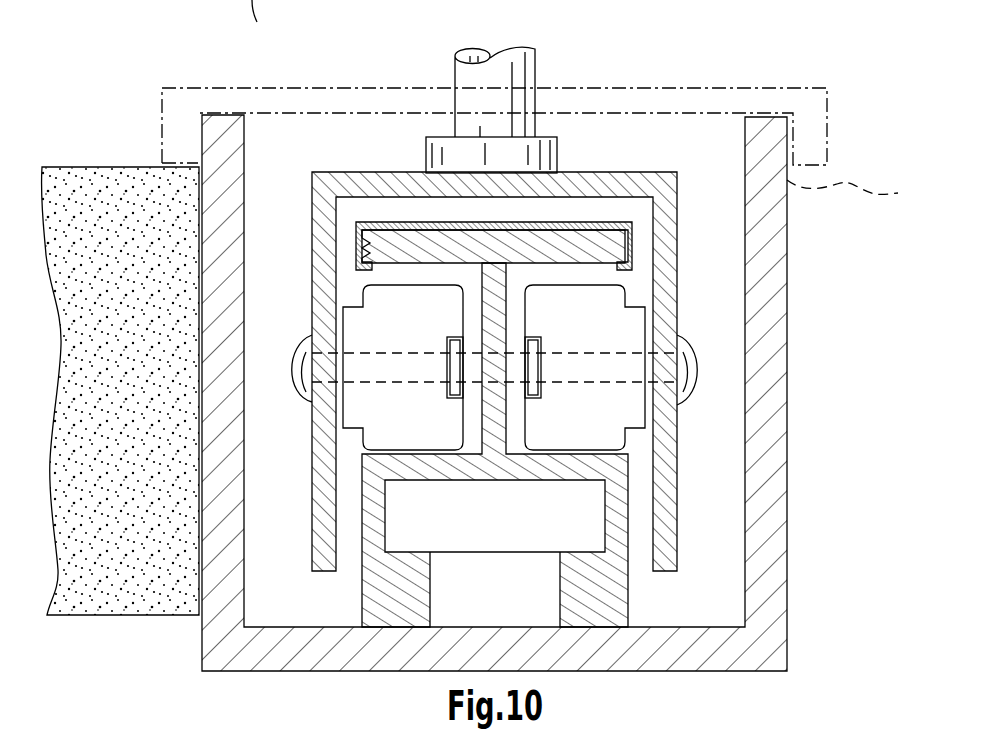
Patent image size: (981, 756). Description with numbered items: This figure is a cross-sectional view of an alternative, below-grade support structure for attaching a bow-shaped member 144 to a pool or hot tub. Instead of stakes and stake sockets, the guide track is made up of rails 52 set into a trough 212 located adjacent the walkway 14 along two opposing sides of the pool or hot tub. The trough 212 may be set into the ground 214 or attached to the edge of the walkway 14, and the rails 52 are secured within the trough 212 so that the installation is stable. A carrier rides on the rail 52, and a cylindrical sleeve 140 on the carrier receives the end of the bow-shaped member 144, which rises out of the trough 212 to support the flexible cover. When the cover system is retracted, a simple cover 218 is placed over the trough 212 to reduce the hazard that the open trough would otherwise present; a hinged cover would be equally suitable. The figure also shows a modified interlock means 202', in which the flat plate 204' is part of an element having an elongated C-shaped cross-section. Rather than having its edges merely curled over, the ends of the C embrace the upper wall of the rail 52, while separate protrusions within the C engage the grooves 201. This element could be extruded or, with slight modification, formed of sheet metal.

The walkway 14 is at (120, 167).
The cover 218 is at (253, 86).
The interlock means 202' is at (494, 305).
The bow-shaped member 144 is at (535, 100).
The cylindrical sleeve 140 is at (558, 155).
The ground 214 is at (847, 183).
The flat plate 204' is at (618, 247).
The grooves 201 is at (617, 230).
The rail 52 is at (508, 287).
The trough 212 is at (788, 452).